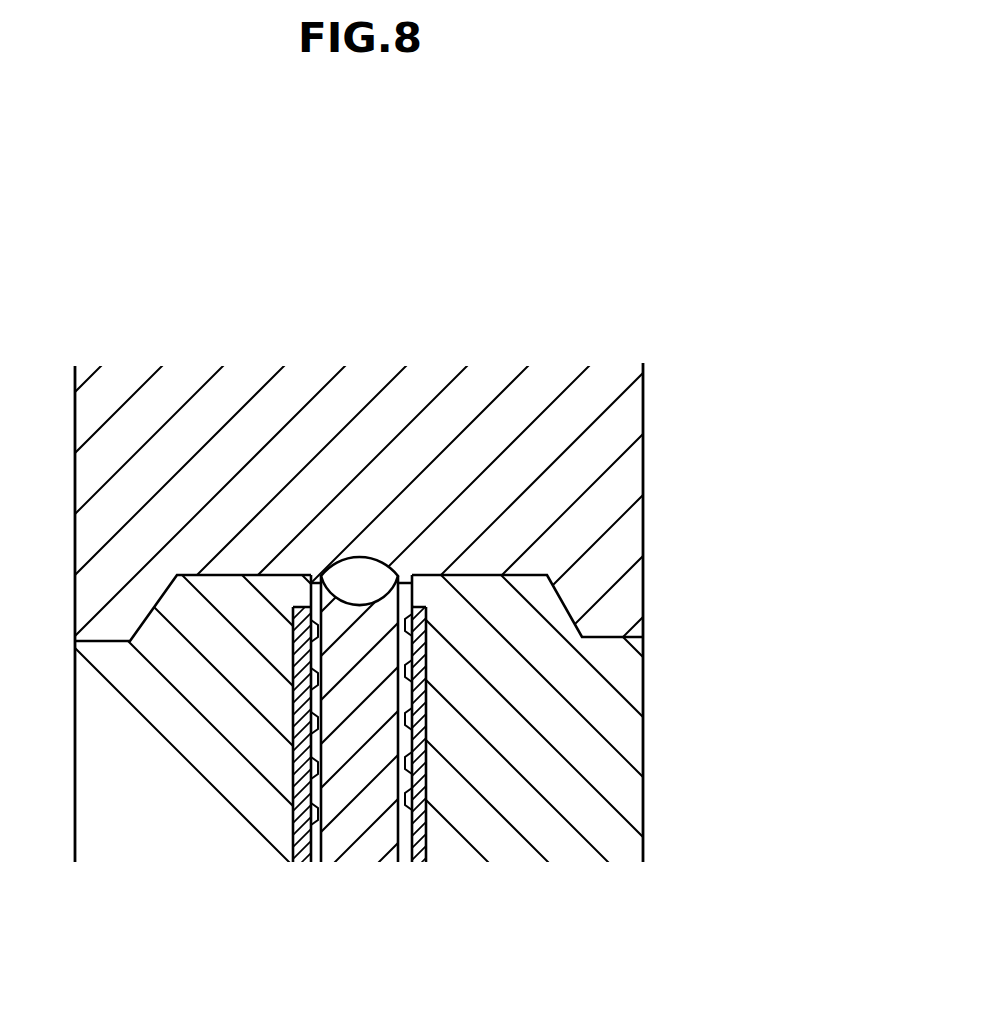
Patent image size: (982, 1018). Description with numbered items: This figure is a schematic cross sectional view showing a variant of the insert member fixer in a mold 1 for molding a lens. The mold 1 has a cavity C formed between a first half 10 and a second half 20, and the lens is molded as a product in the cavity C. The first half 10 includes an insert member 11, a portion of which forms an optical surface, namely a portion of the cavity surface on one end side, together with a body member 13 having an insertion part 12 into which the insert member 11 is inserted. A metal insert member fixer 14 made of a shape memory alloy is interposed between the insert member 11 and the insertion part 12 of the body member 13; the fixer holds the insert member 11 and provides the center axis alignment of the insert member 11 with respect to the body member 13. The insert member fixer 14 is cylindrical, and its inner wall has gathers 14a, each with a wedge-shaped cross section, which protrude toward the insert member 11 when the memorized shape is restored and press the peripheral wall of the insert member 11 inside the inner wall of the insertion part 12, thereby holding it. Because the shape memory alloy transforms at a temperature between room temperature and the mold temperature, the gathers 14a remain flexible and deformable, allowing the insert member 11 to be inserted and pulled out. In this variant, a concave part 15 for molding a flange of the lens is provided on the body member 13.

The mold 1 is at (705, 341).
The second half 20 is at (643, 493).
The first half 10 is at (643, 717).
The body member 13 is at (617, 775).
The concave part 15 is at (313, 578).
The cavity C is at (360, 558).
The insert member 11 is at (363, 845).
The insert member fixer 14 is at (427, 797).
The gathers 14a is at (316, 802).
The insertion part 12 is at (314, 794).